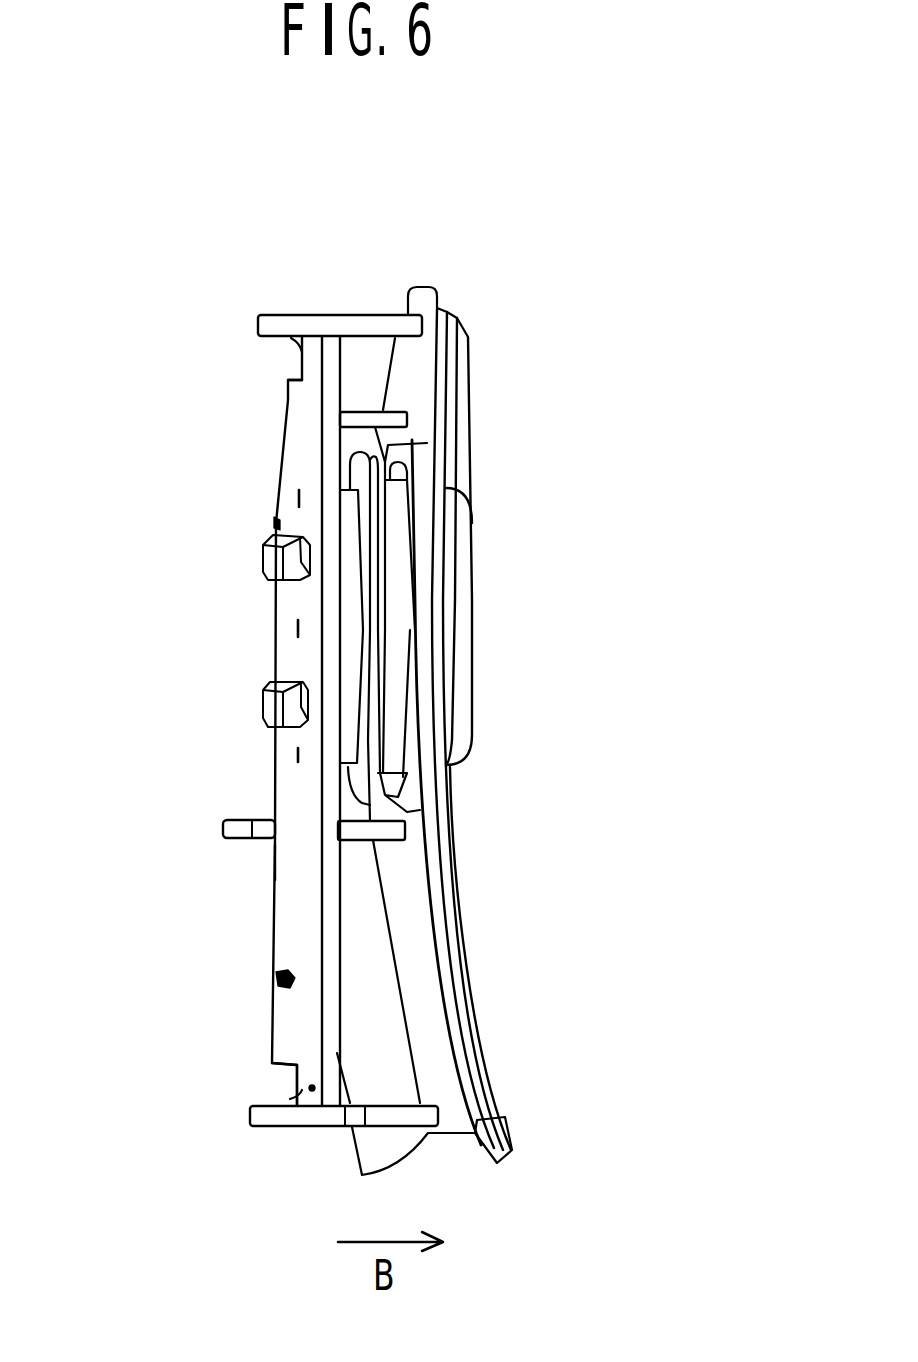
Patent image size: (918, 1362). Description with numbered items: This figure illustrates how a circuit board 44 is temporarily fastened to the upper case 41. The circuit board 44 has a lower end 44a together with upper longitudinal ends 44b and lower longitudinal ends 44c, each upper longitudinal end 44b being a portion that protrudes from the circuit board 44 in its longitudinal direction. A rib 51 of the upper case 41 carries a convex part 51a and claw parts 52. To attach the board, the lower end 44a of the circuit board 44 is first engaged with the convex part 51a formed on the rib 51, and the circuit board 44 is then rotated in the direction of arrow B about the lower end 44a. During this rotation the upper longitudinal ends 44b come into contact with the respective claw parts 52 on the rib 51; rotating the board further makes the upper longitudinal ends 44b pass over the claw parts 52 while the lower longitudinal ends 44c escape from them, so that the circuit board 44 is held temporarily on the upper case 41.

The upper case 41 is at (446, 1031).
The circuit board 44 is at (305, 900).
The lower end 44a is at (281, 860).
The upper longitudinal end 44b is at (313, 343).
The lower longitudinal end 44c is at (290, 380).
The rib 51 is at (330, 312).
The convex part 51a is at (257, 820).
The claw part 52 is at (293, 343).